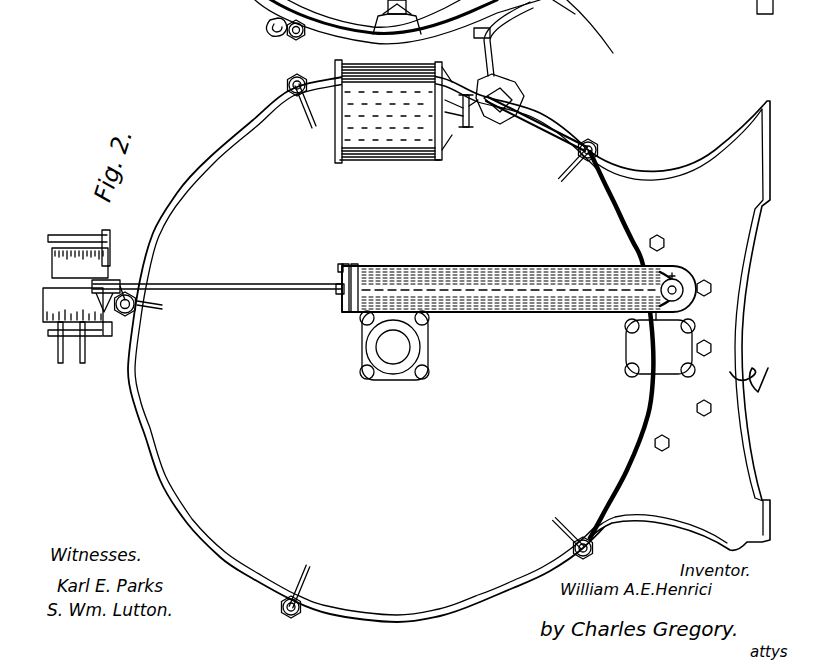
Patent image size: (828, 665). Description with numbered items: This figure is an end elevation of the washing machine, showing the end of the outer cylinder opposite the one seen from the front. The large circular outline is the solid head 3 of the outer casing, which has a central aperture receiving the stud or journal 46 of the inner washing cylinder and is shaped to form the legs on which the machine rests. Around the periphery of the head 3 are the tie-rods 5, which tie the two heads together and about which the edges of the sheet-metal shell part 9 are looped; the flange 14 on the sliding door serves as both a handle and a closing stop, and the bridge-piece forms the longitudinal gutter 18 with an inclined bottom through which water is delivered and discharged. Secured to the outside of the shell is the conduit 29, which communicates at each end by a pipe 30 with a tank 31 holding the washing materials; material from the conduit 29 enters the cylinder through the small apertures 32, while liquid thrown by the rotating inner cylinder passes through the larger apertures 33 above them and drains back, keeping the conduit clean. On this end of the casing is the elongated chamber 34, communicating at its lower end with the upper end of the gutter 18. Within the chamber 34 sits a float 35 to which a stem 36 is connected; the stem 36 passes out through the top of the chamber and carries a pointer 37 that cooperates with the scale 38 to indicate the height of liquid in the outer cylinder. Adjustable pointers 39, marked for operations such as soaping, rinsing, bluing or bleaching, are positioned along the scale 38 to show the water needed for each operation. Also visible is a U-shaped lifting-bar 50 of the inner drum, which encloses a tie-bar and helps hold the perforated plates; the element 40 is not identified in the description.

The head 3 is at (370, 590).
The tie-rods 5 is at (291, 36).
The shell part 9 is at (440, 37).
The flange 14 is at (267, 32).
The gutter 18 is at (699, 43).
The conduit 29 is at (498, 24).
The pipe 30 is at (541, 113).
The tank 31 is at (337, 78).
The small apertures 32 is at (562, 2).
The larger apertures 33 is at (536, 8).
The chamber 34 is at (573, 270).
The float 35 is at (667, 263).
The stem 36 is at (257, 282).
The pointer 37 is at (112, 336).
The scale 38 is at (66, 340).
The adjustable pointers 39 is at (61, 366).
The scale 40 is at (63, 203).
The journal 46 is at (393, 352).
The lifting-bar 50 is at (614, 54).